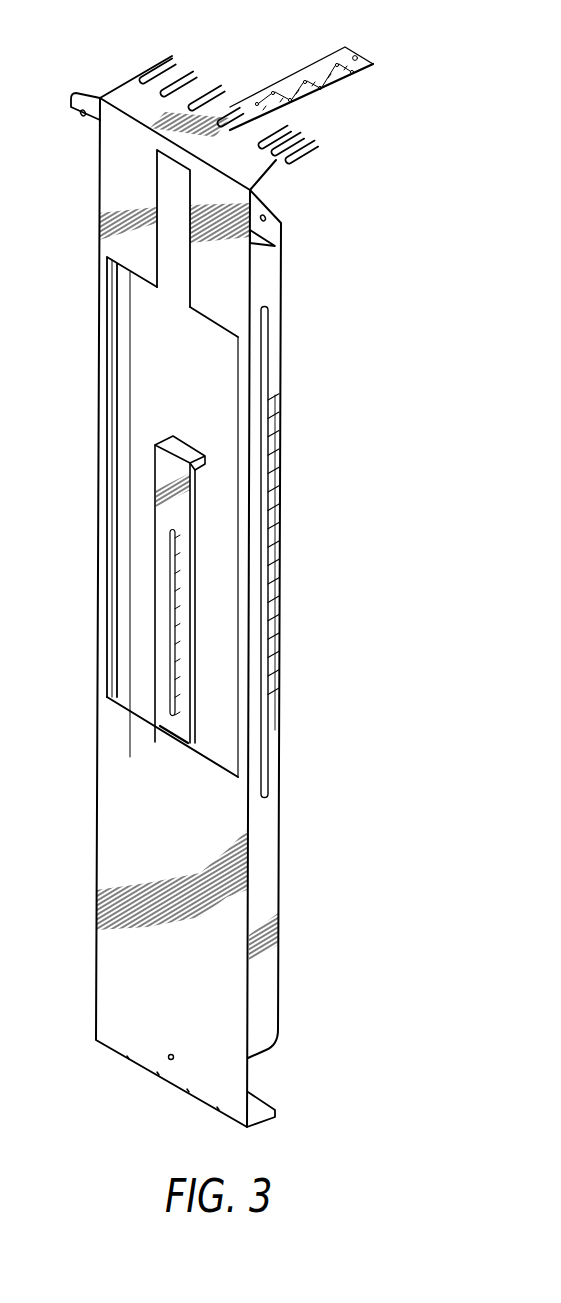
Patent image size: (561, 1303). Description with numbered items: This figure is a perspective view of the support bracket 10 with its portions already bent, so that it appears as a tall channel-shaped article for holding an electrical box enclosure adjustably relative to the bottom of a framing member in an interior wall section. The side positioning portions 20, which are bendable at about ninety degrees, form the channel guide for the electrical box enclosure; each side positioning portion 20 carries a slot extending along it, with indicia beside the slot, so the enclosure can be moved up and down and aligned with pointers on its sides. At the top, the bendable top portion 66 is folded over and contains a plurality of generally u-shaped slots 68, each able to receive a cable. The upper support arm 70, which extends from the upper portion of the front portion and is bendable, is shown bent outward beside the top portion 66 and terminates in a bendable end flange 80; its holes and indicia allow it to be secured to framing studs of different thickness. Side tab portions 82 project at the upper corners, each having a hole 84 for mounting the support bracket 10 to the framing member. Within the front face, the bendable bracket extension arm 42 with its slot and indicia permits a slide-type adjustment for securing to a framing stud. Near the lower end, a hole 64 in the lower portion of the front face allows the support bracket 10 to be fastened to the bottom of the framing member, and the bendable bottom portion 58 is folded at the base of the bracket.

The support bracket 10 is at (222, 975).
The side positioning portions 20 is at (267, 877).
The bracket extension arm 42 is at (180, 515).
The bottom portion 58 is at (263, 1110).
The hole 64 is at (170, 1059).
The top portion 66 is at (266, 166).
The slots 68 is at (178, 62).
The upper support arm 70 is at (318, 90).
The end flange 80 is at (372, 74).
The side tab portions 82 is at (76, 110).
The hole 84 is at (83, 115).